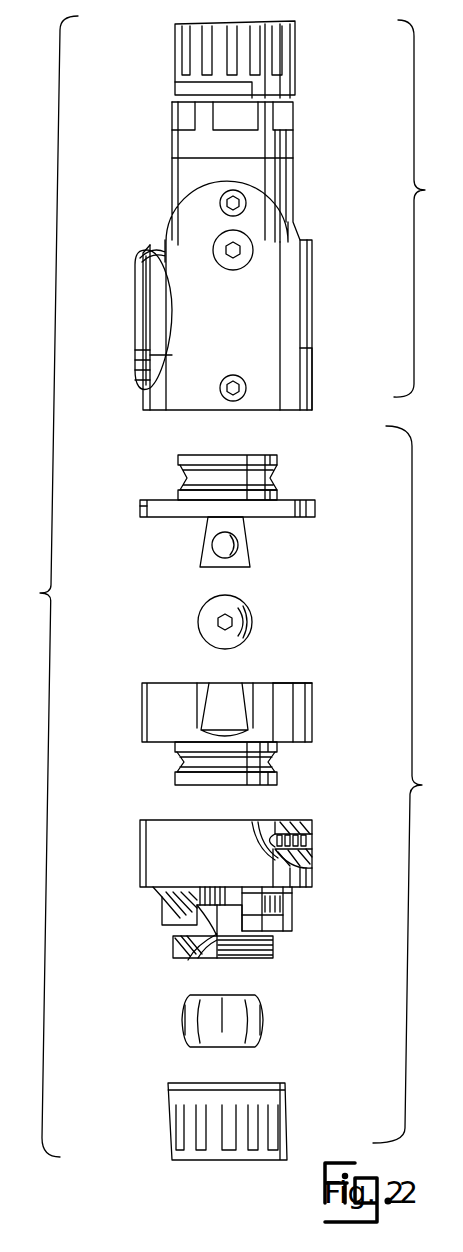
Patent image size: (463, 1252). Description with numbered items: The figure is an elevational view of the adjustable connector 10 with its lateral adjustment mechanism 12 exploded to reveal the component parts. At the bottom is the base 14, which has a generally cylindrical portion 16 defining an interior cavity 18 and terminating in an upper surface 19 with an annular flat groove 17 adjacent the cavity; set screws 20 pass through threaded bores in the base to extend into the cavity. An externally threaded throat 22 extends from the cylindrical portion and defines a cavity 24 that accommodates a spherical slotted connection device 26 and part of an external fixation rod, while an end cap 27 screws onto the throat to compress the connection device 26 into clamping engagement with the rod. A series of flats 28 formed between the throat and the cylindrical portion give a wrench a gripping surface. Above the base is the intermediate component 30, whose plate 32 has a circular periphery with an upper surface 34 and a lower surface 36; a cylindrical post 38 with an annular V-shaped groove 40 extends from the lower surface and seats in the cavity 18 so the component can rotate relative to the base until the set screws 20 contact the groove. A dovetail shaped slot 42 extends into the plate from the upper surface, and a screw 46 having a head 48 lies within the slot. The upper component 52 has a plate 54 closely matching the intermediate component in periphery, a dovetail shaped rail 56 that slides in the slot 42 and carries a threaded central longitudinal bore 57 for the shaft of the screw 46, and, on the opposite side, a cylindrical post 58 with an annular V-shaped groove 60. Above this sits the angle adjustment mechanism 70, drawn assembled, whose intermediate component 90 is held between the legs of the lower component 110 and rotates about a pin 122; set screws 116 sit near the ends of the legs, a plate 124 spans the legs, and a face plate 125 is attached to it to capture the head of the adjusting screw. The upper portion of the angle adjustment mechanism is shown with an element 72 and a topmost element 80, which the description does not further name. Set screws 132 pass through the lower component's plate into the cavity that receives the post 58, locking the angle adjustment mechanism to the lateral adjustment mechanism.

The adjustable connector 10 is at (236, 586).
The lateral adjustment mechanism 12 is at (418, 784).
The base 14 is at (128, 829).
The generally cylindrical portion 16 is at (140, 860).
The annular flat groove 17 is at (275, 820).
The interior cavity 18 is at (258, 838).
The upper surface 19 is at (303, 822).
The set screws 20 is at (308, 840).
The externally threaded throat 22 is at (172, 946).
The cavity 24 is at (190, 958).
The spherical slotted connection device 26 is at (264, 1013).
The end cap 27 is at (270, 1084).
The flats 28 is at (268, 913).
The intermediate component 30 is at (128, 701).
The plate 32 is at (313, 702).
The upper surface 34 is at (298, 682).
The lower surface 36 is at (303, 752).
The cylindrical post 38 is at (278, 776).
The annular V-shaped groove 40 is at (180, 760).
The dovetail shaped slot 42 is at (232, 680).
The screw 46 is at (186, 612).
The head 48 is at (255, 612).
The upper component 52 is at (126, 495).
The plate 54 is at (316, 512).
The dovetail shaped rail 56 is at (207, 538).
The threaded central longitudinal bore 57 is at (235, 545).
The cylindrical post 58 is at (278, 457).
The annular V-shaped groove 60 is at (278, 483).
The angle adjustment mechanism 70 is at (428, 208).
The threaded section 72 is at (308, 111).
The cap 80 is at (297, 52).
The intermediate component 90 is at (306, 163).
The lower component 110 is at (322, 348).
The set screws 116 is at (243, 207).
The pin 122 is at (222, 262).
The plate 124 is at (153, 248).
The face plate 125 is at (140, 268).
The set screws 132 is at (228, 377).